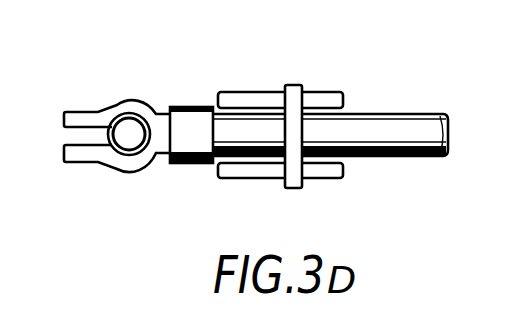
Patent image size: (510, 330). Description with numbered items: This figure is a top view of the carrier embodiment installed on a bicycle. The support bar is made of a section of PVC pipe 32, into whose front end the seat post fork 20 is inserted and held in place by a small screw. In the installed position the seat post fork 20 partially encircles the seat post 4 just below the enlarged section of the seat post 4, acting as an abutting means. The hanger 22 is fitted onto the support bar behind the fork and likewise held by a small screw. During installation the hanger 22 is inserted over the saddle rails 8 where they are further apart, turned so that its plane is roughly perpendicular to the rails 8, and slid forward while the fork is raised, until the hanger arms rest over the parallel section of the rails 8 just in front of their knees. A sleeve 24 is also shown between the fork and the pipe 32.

The seat post fork 20 is at (70, 111).
The seat post 4 is at (114, 105).
The sleeve 24 is at (206, 107).
The hanger 22 is at (303, 84).
The saddle rails 8 is at (350, 100).
The PVC pipe 32 is at (408, 156).